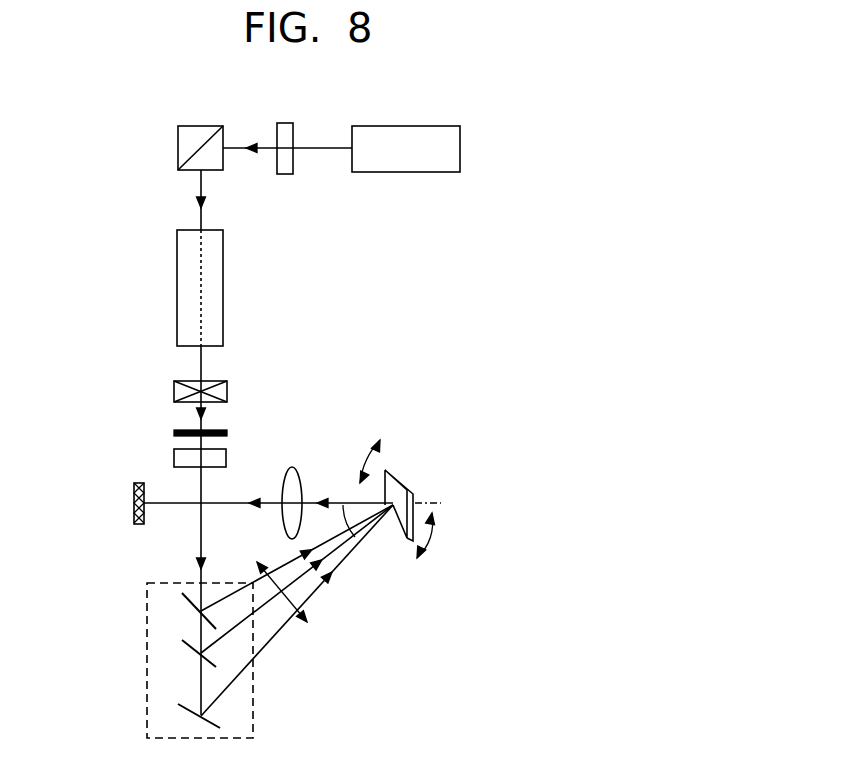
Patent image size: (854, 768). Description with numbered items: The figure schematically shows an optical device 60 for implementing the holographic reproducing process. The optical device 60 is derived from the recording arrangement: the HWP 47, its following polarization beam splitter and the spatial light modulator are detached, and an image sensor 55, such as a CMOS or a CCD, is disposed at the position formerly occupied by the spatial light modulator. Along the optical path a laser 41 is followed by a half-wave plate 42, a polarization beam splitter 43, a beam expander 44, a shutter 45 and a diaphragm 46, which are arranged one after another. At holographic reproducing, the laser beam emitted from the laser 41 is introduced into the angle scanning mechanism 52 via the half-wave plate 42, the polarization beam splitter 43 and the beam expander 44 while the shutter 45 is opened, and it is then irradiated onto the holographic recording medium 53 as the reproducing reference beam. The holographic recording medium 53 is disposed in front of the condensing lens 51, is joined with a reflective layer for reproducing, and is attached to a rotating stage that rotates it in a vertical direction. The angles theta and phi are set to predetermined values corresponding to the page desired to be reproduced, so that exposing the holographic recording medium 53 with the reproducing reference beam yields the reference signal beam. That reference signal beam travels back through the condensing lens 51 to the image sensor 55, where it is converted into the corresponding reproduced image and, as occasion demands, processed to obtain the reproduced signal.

The optical device 60 is at (489, 89).
The laser 41 is at (426, 130).
The half-wave plate 42 is at (285, 126).
The polarization beam splitter 43 is at (193, 130).
The beam expander 44 is at (183, 247).
The shutter 45 is at (178, 390).
The diaphragm 46 is at (176, 432).
The HWP 47 is at (178, 460).
The image sensor 55 is at (136, 490).
The condensing lens 51 is at (296, 471).
The holographic recording medium 53 is at (398, 478).
The angle scanning mechanism 52 is at (254, 711).